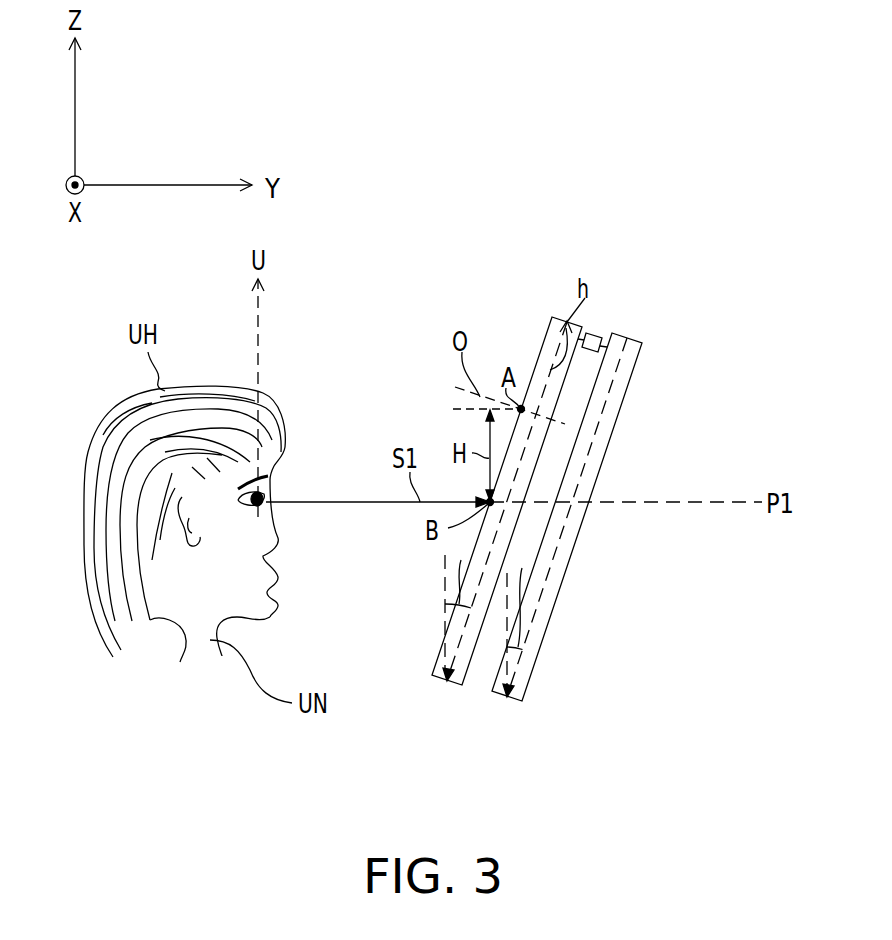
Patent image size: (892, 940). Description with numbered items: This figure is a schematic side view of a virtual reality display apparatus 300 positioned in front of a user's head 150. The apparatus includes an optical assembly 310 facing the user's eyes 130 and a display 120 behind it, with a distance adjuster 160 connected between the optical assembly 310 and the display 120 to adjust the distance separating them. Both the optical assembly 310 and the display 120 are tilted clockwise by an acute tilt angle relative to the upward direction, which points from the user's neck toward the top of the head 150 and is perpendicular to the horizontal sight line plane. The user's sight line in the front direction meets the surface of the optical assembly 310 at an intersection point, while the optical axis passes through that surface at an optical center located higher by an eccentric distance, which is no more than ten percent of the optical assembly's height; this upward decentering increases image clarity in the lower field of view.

The display 120 is at (615, 398).
The eyes 130 is at (267, 497).
The user's head 150 is at (247, 595).
The distance adjuster 160 is at (597, 332).
The optical assembly 310 is at (550, 340).
The virtual reality display apparatus 300 is at (767, 808).